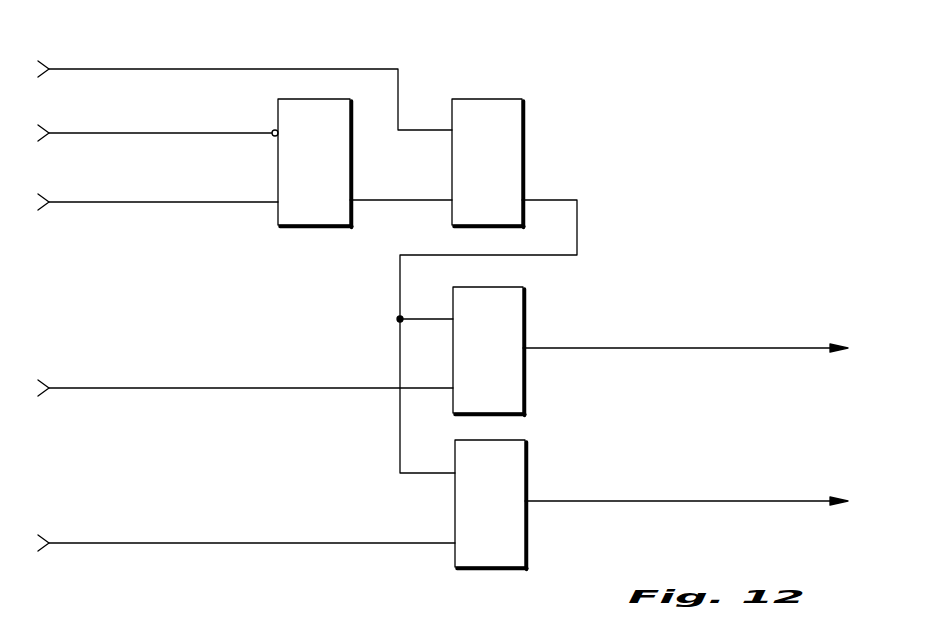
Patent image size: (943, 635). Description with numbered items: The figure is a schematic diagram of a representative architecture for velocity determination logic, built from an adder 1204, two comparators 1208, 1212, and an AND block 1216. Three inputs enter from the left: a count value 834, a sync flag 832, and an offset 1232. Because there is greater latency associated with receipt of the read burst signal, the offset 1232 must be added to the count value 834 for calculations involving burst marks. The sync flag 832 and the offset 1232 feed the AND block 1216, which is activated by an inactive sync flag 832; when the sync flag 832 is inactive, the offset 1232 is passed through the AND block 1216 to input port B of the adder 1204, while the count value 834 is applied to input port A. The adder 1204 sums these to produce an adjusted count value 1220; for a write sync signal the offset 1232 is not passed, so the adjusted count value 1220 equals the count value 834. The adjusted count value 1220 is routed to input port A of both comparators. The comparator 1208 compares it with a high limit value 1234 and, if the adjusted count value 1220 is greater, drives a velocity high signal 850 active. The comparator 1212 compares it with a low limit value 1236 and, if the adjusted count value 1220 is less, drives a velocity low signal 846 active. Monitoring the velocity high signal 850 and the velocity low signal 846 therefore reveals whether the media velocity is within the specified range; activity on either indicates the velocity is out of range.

The count value 834 is at (250, 69).
The sync flag 832 is at (250, 133).
The offset 1232 is at (250, 202).
The AND block 1216 is at (353, 170).
The adder 1204 is at (523, 133).
The adjusted count value 1220 is at (577, 227).
The comparator 1208 is at (524, 320).
The high limit value 1234 is at (275, 388).
The velocity high signal 850 is at (803, 348).
The comparator 1212 is at (526, 473).
The low limit value 1236 is at (279, 543).
The velocity low signal 846 is at (805, 501).